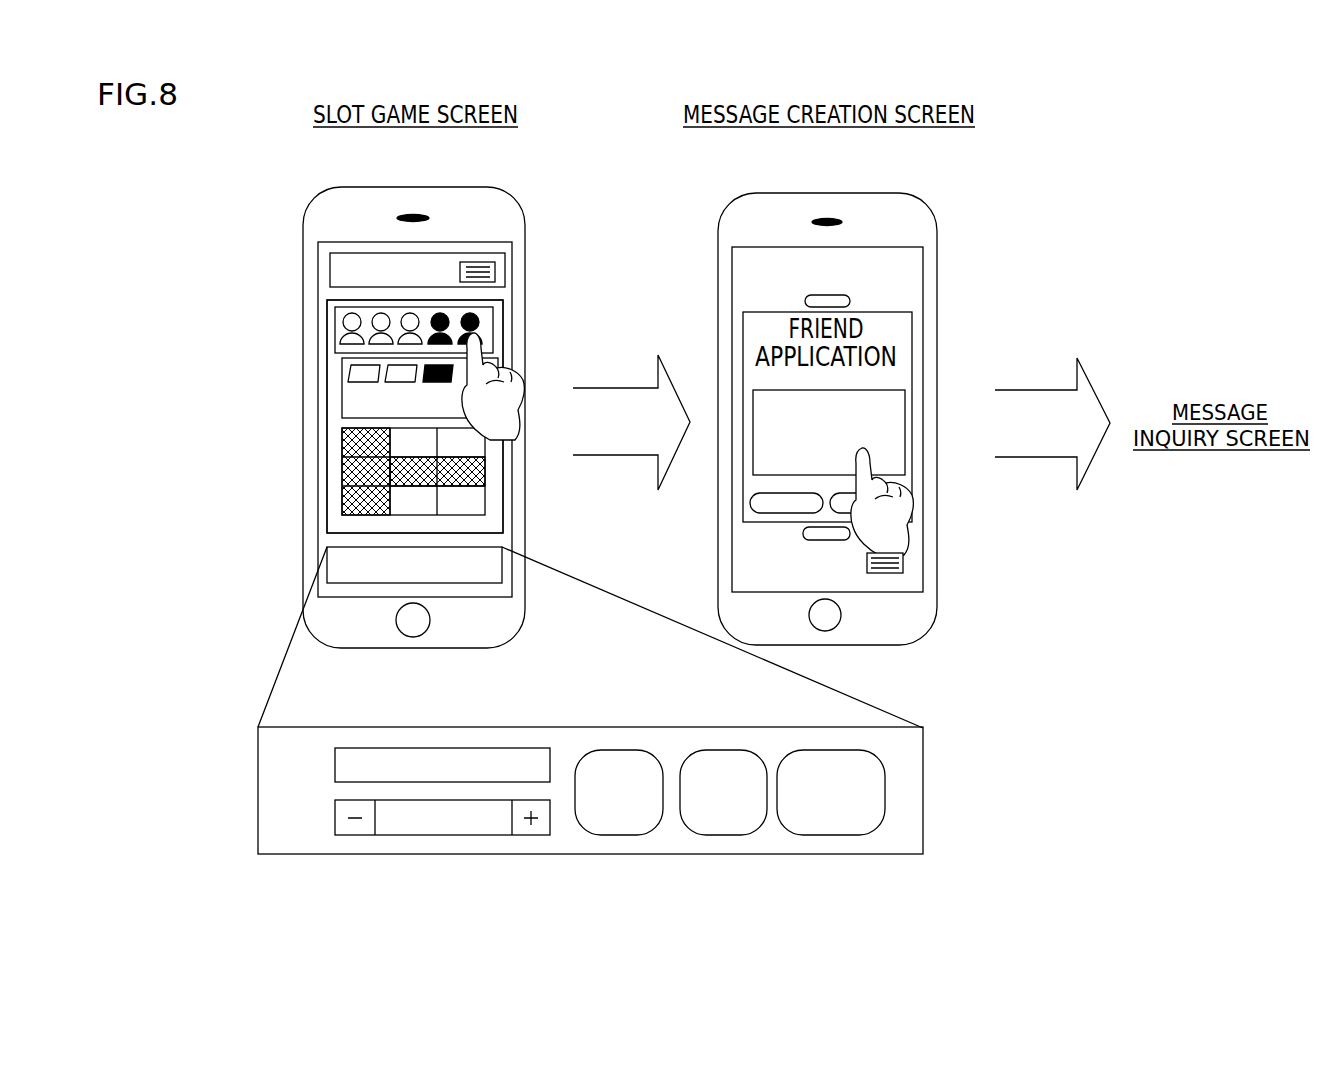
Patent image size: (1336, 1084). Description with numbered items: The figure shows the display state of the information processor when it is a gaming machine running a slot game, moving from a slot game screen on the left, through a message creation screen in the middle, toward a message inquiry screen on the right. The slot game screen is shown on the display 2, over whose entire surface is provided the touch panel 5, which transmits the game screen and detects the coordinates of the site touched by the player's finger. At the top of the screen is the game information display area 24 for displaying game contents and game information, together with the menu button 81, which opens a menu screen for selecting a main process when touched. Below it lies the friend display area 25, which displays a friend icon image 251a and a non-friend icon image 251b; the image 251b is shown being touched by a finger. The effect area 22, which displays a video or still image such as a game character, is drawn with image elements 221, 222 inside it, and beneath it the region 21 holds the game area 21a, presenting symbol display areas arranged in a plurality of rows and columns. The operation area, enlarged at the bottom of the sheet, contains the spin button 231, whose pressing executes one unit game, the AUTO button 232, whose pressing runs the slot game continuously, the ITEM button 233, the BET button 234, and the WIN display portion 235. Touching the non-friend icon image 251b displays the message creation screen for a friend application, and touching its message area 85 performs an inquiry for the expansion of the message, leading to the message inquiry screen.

The display 2 is at (504, 304).
The touch panel 5 is at (504, 304).
The reel display area 21 is at (360, 471).
The game area 21a is at (340, 436).
The effect area 22 is at (346, 373).
The chip icon 221 is at (352, 375).
The selected chip icon 222 is at (432, 381).
The spin button 231 is at (832, 836).
The AUTO button 232 is at (724, 836).
The ITEM button 233 is at (620, 836).
The BET button 234 is at (445, 836).
The WIN display portion 235 is at (455, 748).
The game information display area 24 is at (330, 266).
The friend display area 25 is at (391, 316).
The friend icon image 251a is at (345, 322).
The non-friend icon image 251b is at (480, 326).
The menu button 81 is at (496, 266).
The message area 85 is at (889, 392).